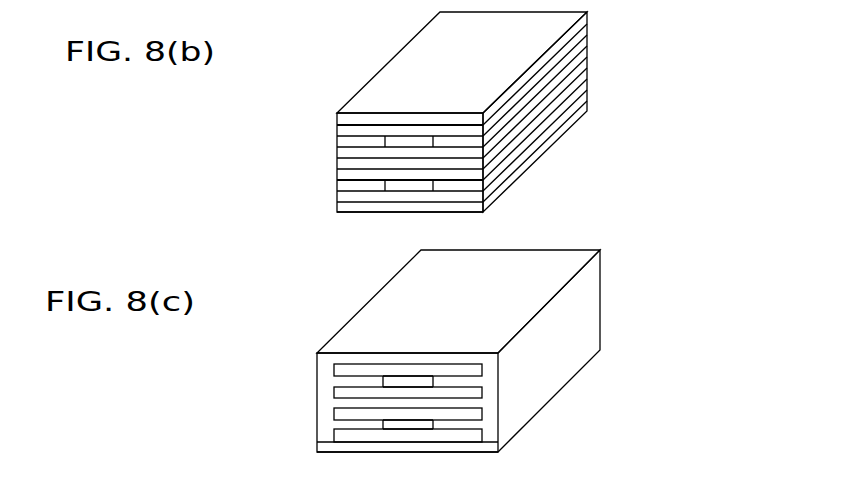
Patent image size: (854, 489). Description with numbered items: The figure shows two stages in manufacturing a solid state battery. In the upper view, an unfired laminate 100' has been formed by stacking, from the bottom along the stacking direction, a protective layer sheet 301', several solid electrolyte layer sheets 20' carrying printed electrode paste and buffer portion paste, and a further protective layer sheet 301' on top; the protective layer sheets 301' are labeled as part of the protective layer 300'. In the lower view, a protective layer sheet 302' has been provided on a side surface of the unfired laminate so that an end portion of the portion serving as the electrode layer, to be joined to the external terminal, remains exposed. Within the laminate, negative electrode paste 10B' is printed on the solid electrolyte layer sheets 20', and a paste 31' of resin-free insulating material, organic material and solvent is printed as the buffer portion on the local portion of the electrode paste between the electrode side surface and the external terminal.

In FIG. 8B, the protective layer sheet 301' is at (385, 127).
In FIG. 8C, the protective layer sheet 301' is at (504, 354).
In FIG. 8B, the package 300' is at (411, 127).
In FIG. 8C, the package 300' is at (548, 354).
In FIG. 8C, the protective layer sheet 302' is at (603, 351).
In FIG. 8B, the stacked multilayer element 100' is at (369, 162).
In FIG. 8C, the negative electrode paste 10B' is at (461, 363).
In FIG. 8C, the solid electrolyte layer sheet 20' is at (359, 400).
In FIG. 8C, the paste 31' is at (403, 406).